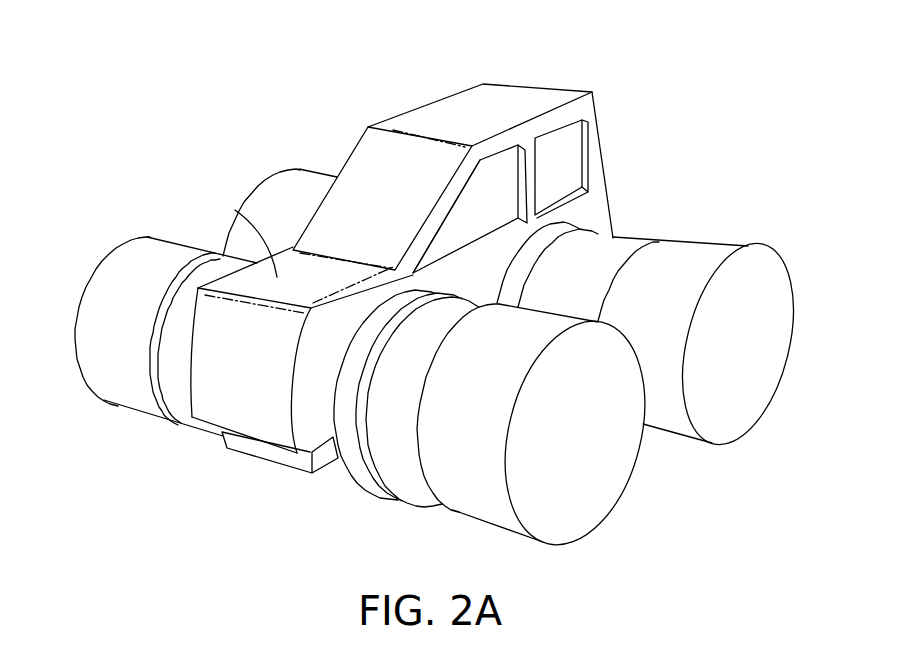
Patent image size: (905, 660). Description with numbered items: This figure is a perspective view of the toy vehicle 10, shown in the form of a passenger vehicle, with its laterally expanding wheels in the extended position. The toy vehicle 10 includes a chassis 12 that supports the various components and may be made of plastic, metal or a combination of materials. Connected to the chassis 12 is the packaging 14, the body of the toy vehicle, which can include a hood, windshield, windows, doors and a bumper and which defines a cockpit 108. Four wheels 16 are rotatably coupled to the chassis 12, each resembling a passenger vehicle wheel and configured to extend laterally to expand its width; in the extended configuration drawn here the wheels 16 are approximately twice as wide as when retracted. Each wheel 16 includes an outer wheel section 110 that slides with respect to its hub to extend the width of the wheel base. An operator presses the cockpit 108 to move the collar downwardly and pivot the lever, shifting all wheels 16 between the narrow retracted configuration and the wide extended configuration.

The toy vehicle 10 is at (256, 112).
The cockpit 108 is at (460, 103).
The packaging 14 is at (275, 262).
The chassis 12 is at (290, 474).
The wheel 16 is at (275, 187).
The outer wheel section 110 is at (122, 410).